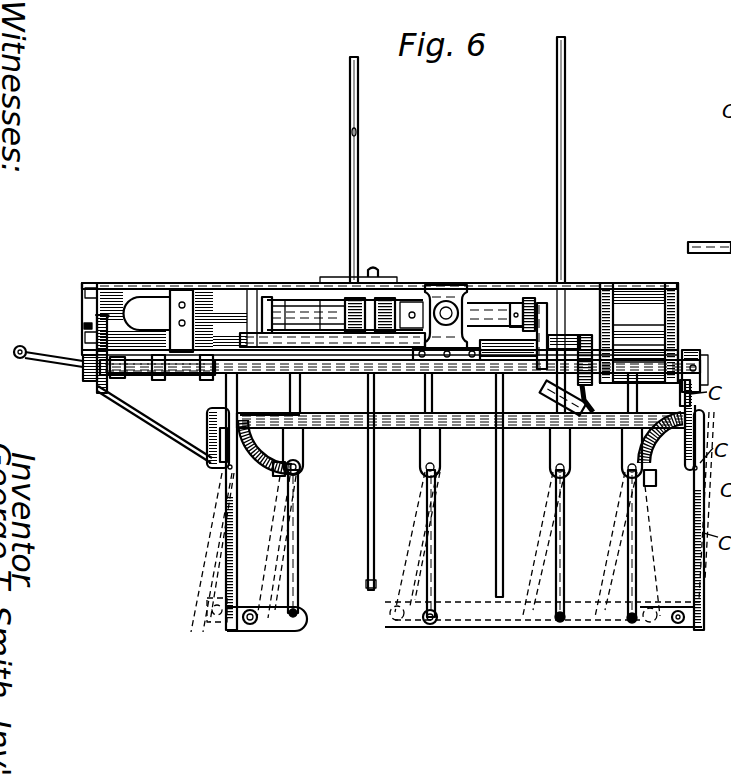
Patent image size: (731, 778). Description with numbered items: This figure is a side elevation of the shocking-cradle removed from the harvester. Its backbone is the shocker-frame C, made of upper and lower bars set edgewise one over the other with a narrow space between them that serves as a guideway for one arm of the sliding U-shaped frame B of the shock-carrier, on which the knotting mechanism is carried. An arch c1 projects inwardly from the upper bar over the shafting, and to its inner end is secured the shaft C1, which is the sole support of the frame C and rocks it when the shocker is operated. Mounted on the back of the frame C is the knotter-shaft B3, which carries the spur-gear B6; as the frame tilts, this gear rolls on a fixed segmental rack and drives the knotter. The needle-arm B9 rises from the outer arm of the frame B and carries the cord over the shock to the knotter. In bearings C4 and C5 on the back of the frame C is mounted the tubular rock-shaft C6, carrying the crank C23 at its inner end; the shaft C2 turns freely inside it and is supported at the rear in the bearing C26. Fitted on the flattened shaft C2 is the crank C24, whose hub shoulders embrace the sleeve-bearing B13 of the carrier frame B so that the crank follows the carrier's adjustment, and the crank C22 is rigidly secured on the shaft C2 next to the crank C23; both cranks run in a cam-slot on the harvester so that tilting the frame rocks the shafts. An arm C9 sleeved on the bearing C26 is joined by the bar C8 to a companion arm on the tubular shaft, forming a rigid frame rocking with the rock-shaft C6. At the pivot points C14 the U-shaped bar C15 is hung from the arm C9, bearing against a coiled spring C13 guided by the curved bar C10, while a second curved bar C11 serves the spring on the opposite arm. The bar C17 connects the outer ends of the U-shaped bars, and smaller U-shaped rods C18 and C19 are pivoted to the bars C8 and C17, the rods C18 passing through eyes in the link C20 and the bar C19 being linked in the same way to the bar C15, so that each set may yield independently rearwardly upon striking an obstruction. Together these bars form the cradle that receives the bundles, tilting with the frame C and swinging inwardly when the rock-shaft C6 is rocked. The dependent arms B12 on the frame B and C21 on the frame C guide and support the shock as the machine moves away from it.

The U-shaped frame B is at (244, 310).
The shocker-frame C is at (222, 285).
The knotter-shaft B3 is at (500, 303).
The spur-gear B6 is at (540, 298).
The needle-arm B9 is at (357, 152).
The dependent arm B12 is at (368, 540).
The sleeve-bearing B13 is at (184, 376).
The arch c1 is at (428, 284).
The shaft C1 is at (448, 301).
The shaft C2 is at (542, 316).
The bearing C4 is at (682, 352).
The bearing C5 is at (597, 373).
The tubular rock-shaft C6 is at (644, 360).
The bar C8 is at (336, 429).
The arm C9 is at (94, 385).
The curved bar C10 is at (276, 474).
The curved bar C11 is at (659, 492).
The coiled spring C13 is at (260, 415).
The pivot points C14 is at (212, 473).
The U-shaped bar C15 is at (228, 537).
The bar C17 is at (47, 358).
The U-shaped rods C18 is at (436, 527).
The U-shaped bar C19 is at (299, 527).
The link C20 is at (498, 620).
The dependent arm C21 is at (493, 480).
The crank C22 is at (561, 342).
The crank C23 is at (546, 393).
The crank C24 is at (141, 390).
The bearing C26 is at (88, 347).